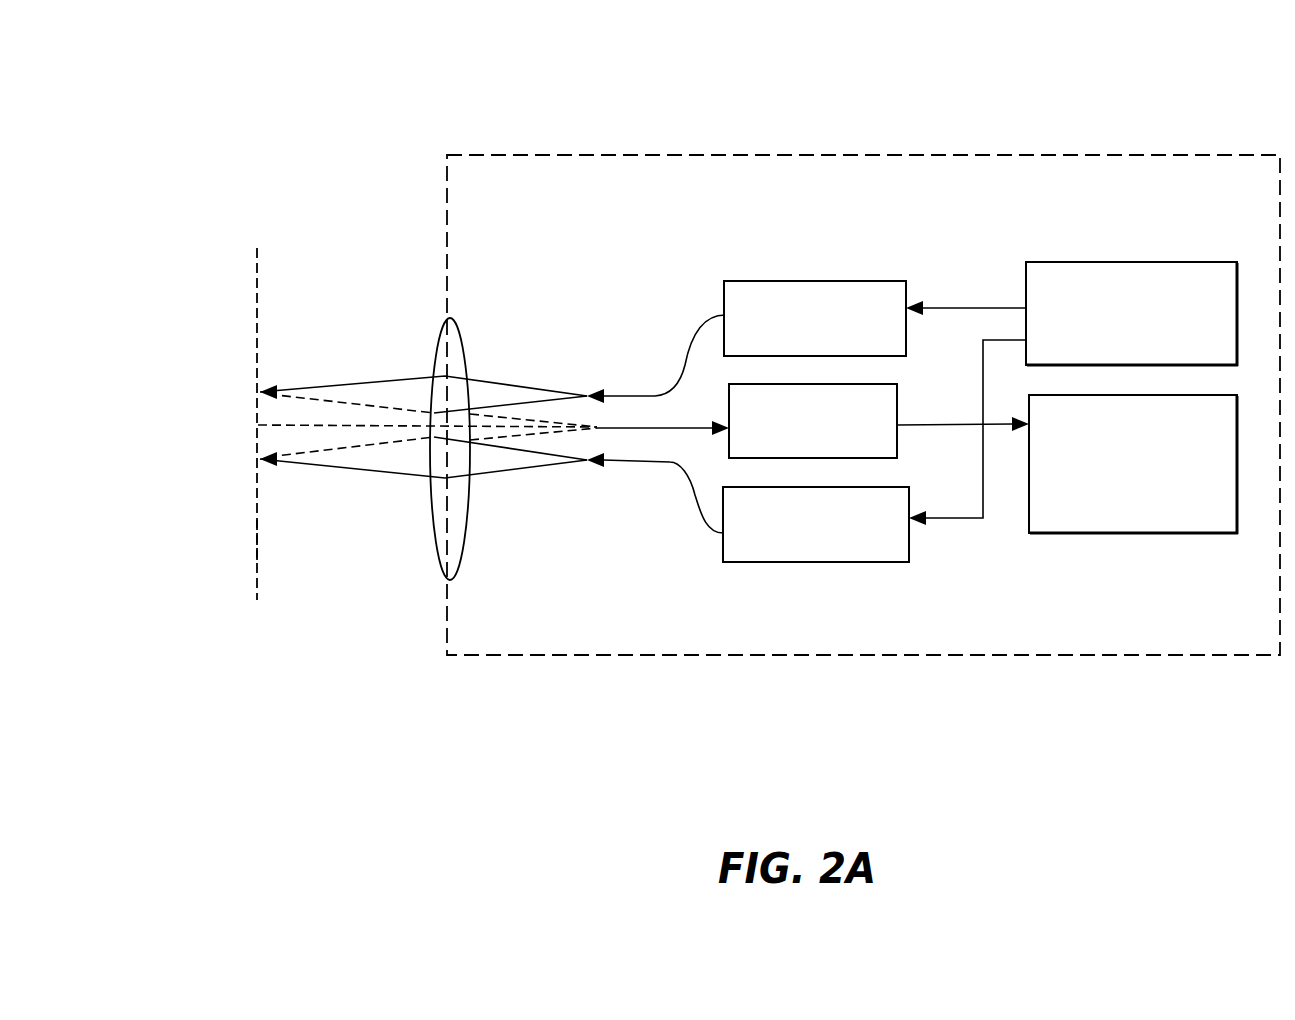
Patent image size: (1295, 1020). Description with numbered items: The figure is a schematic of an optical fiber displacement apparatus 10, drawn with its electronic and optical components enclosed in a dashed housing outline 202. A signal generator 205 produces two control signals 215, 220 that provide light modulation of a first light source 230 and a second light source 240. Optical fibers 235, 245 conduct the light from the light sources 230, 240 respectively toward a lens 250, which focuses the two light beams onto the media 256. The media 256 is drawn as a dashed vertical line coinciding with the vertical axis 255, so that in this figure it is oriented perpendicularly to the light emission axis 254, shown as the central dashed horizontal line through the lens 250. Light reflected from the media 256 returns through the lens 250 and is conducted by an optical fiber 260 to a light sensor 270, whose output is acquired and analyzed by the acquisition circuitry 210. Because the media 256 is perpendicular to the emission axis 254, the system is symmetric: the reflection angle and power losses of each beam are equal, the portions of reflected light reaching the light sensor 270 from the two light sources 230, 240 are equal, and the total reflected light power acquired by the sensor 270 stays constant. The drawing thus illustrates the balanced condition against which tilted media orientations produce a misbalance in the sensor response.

The optical fiber displacement apparatus 10 is at (1022, 103).
The housing 202 is at (676, 157).
The signal generator 205 is at (1113, 262).
The acquisition circuitry 210 is at (1115, 533).
The control signal 215 is at (940, 302).
The control signal 220 is at (950, 522).
The light source 230 is at (875, 281).
The optical fiber 235 is at (673, 363).
The light source 240 is at (820, 562).
The optical fiber 245 is at (708, 523).
The lens 250 is at (458, 330).
The light emission axis 254 is at (305, 425).
The vertical axis 255 is at (257, 282).
The media 256 is at (262, 538).
The optical fiber 260 is at (667, 428).
The light sensor 270 is at (879, 410).